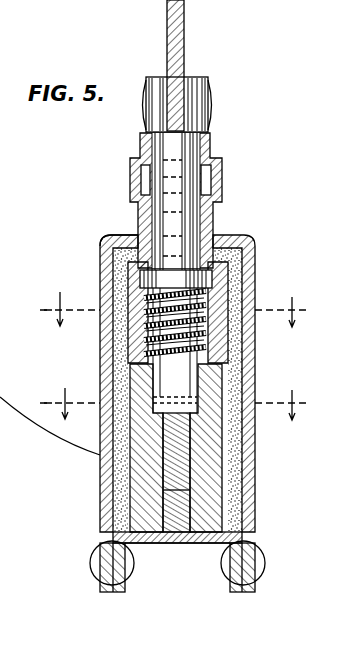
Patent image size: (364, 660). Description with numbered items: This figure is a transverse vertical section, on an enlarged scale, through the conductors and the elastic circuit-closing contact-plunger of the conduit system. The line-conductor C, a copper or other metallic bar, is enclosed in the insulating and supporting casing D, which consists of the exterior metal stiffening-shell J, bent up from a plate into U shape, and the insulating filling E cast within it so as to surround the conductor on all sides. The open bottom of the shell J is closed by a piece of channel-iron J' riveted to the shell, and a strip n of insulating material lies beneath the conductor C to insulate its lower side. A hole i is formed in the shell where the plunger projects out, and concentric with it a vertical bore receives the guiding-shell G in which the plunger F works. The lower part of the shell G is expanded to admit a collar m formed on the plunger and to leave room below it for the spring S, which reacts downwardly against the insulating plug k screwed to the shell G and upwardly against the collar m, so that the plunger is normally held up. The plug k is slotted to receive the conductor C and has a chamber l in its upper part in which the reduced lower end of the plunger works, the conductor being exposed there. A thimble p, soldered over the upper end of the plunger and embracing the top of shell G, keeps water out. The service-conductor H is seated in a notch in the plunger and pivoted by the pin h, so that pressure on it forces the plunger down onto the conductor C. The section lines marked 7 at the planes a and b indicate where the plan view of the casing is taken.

The service-conductor H is at (186, 33).
The transverse pin h is at (210, 104).
The thimble p is at (224, 160).
The plunger F is at (176, 273).
The guiding-shell G is at (213, 228).
The hole i is at (110, 238).
The collar m is at (176, 279).
The spring S is at (256, 338).
The plug k is at (162, 458).
The line-conductor C is at (246, 458).
The casing D is at (162, 383).
The insulating filling E is at (258, 493).
The stiffening-shell J is at (154, 532).
The channel-iron J' is at (177, 567).
The insulating strip n is at (177, 556).
The chamber l is at (100, 431).
The section line 7a a is at (185, 309).
The section line 7b b is at (185, 404).
The section-line designation 7 is at (39, 358).